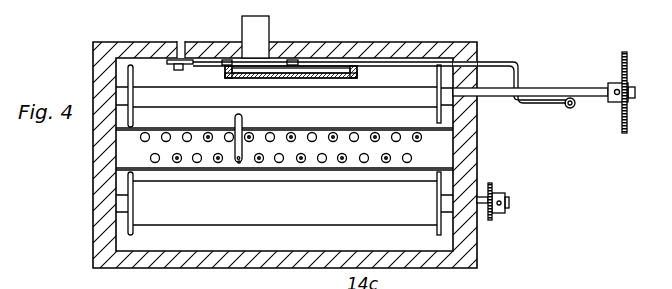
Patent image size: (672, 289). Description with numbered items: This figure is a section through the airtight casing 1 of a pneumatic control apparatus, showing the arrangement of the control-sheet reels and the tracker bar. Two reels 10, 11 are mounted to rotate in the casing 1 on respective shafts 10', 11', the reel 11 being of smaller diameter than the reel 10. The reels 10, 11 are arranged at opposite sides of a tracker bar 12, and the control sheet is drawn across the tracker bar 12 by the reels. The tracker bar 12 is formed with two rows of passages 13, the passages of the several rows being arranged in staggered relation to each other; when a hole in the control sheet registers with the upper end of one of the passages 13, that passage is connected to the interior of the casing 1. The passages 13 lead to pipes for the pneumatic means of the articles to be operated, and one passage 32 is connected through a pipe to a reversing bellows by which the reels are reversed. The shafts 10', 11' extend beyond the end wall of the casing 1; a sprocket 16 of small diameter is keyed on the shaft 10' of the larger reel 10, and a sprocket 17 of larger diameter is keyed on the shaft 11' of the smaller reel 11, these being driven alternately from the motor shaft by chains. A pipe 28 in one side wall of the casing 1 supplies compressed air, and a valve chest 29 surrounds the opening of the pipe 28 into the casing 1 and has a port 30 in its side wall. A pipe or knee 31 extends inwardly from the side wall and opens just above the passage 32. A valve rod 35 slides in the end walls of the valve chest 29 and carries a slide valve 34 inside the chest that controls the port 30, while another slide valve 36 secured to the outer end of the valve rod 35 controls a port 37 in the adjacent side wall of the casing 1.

The casing 1 is at (473, 171).
The reel 10 is at (284, 230).
The shaft 10' is at (507, 185).
The reel 11 is at (284, 96).
The shaft 11' is at (530, 76).
The tracker bar 12 is at (323, 133).
The passages 13 is at (422, 136).
The sprocket 16 is at (492, 220).
The sprocket 17 is at (622, 67).
The pipe 28 is at (270, 32).
The valve chest 29 is at (358, 77).
The port 30 is at (254, 77).
The pipe or knee 31 is at (246, 118).
The passage 32 is at (240, 165).
The slide valve 34 is at (297, 70).
The valve rod 35 is at (369, 65).
The slide valve 36 is at (170, 61).
The port 37 is at (180, 45).